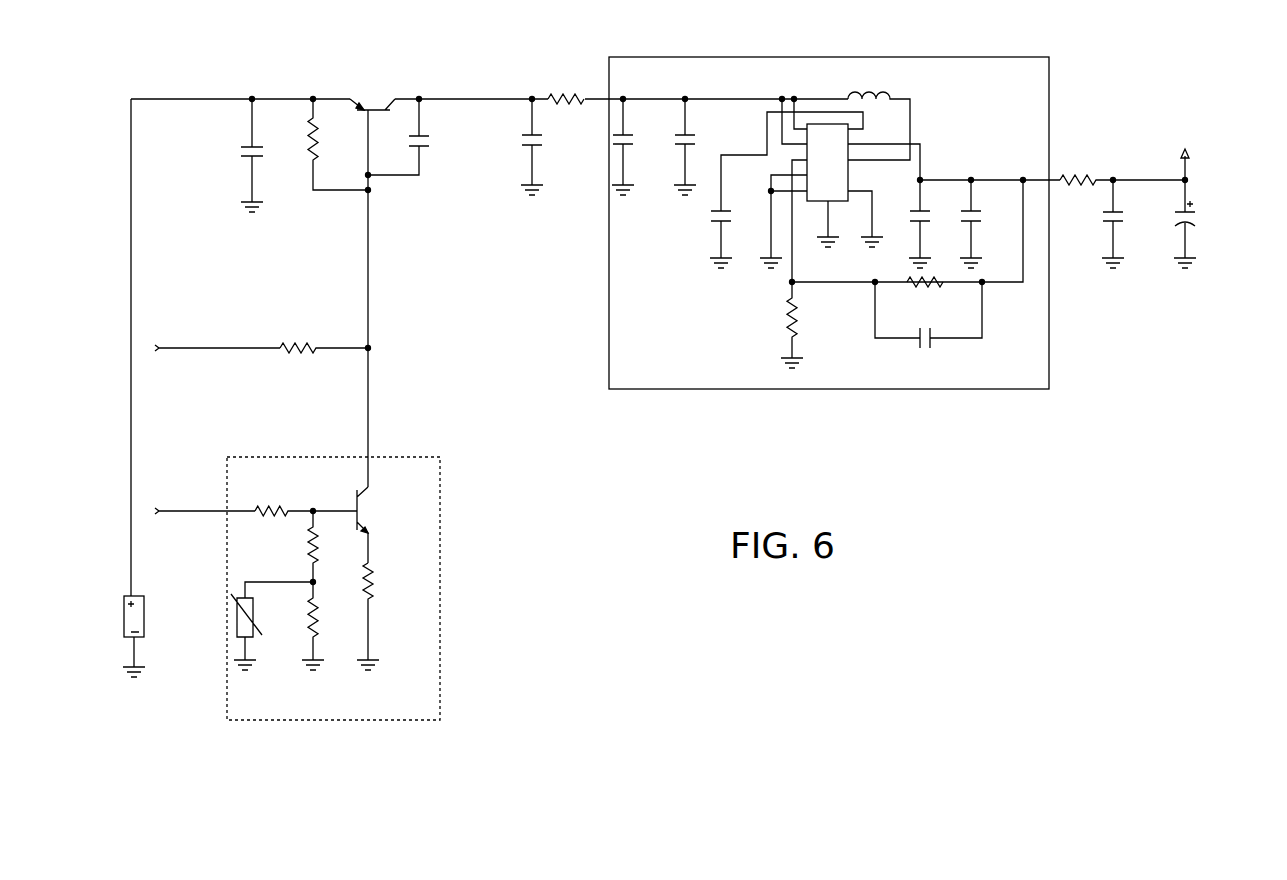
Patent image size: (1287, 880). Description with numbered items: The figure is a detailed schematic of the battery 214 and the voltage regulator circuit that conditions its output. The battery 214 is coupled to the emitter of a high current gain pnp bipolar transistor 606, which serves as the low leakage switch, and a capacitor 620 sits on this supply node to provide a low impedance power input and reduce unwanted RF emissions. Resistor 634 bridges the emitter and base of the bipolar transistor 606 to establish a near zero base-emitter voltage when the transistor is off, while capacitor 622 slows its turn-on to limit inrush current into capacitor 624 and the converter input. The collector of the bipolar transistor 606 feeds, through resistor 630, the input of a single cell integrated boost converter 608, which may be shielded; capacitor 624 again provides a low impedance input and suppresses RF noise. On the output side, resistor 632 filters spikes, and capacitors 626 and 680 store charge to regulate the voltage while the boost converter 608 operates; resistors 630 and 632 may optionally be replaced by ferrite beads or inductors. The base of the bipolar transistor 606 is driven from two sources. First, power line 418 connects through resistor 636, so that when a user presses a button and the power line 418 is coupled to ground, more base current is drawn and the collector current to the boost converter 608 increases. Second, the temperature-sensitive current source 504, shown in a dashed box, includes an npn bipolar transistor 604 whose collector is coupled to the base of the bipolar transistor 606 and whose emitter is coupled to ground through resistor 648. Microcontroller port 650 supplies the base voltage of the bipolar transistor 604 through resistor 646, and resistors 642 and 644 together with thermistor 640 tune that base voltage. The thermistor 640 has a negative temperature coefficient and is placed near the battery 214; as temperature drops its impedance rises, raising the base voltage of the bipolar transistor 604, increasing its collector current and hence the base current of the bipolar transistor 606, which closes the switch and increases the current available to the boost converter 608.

The battery 214 is at (148, 598).
The power line 418 is at (170, 345).
The temperature-sensitive current source 504 is at (442, 708).
The bipolar transistor 604 is at (362, 508).
The bipolar transistor 606 is at (372, 106).
The boost converter 608 is at (1058, 51).
The capacitor 620 is at (262, 158).
The capacitor 622 is at (425, 148).
The capacitor 624 is at (522, 147).
The capacitor 626 is at (1120, 222).
The resistor 630 is at (558, 96).
The resistor 632 is at (1082, 177).
The resistor 634 is at (310, 133).
The resistor 636 is at (300, 345).
The thermistor 640 is at (256, 613).
The resistor 642 is at (308, 551).
The resistor 644 is at (318, 628).
The resistor 646 is at (275, 508).
The resistor 648 is at (372, 586).
The microcontroller port 650 is at (182, 508).
The capacitor 680 is at (1190, 222).